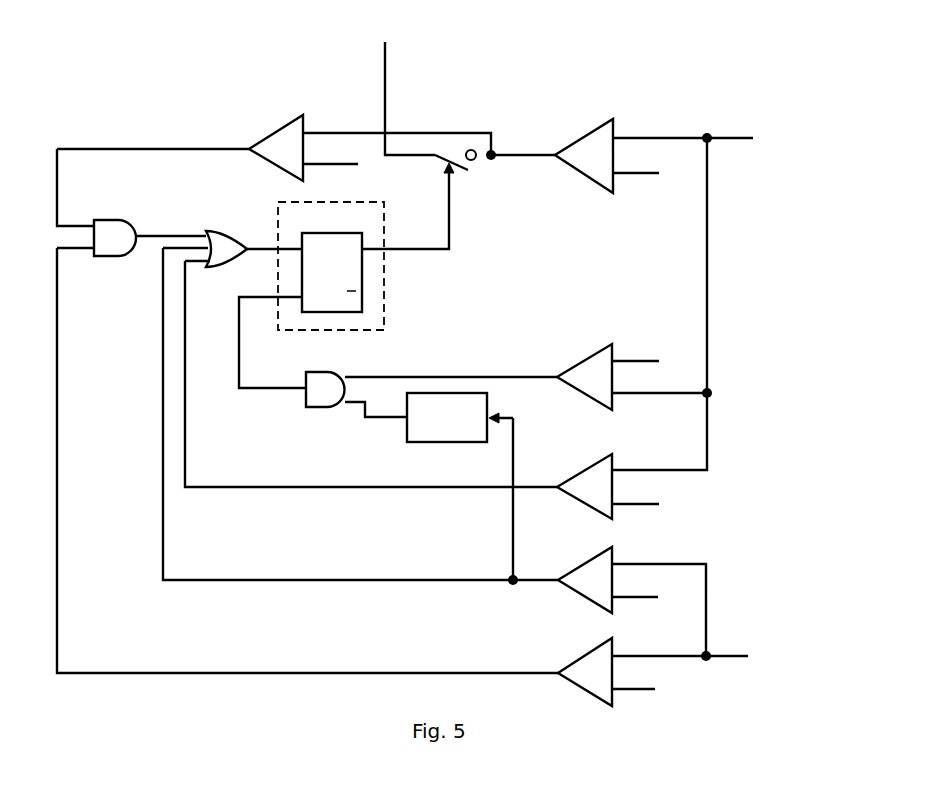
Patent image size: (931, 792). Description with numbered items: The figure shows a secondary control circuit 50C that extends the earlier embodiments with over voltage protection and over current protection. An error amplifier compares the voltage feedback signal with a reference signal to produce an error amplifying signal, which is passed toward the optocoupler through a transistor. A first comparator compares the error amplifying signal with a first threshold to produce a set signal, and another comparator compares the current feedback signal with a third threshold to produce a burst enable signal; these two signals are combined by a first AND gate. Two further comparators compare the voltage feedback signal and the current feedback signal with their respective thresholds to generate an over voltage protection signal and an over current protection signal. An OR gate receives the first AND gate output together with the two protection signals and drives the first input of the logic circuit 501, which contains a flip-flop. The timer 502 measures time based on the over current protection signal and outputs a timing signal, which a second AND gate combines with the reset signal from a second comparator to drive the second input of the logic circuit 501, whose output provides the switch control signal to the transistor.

The secondary control circuit 50C is at (764, 47).
The logic circuit 501 is at (300, 331).
The timer 502 is at (420, 443).